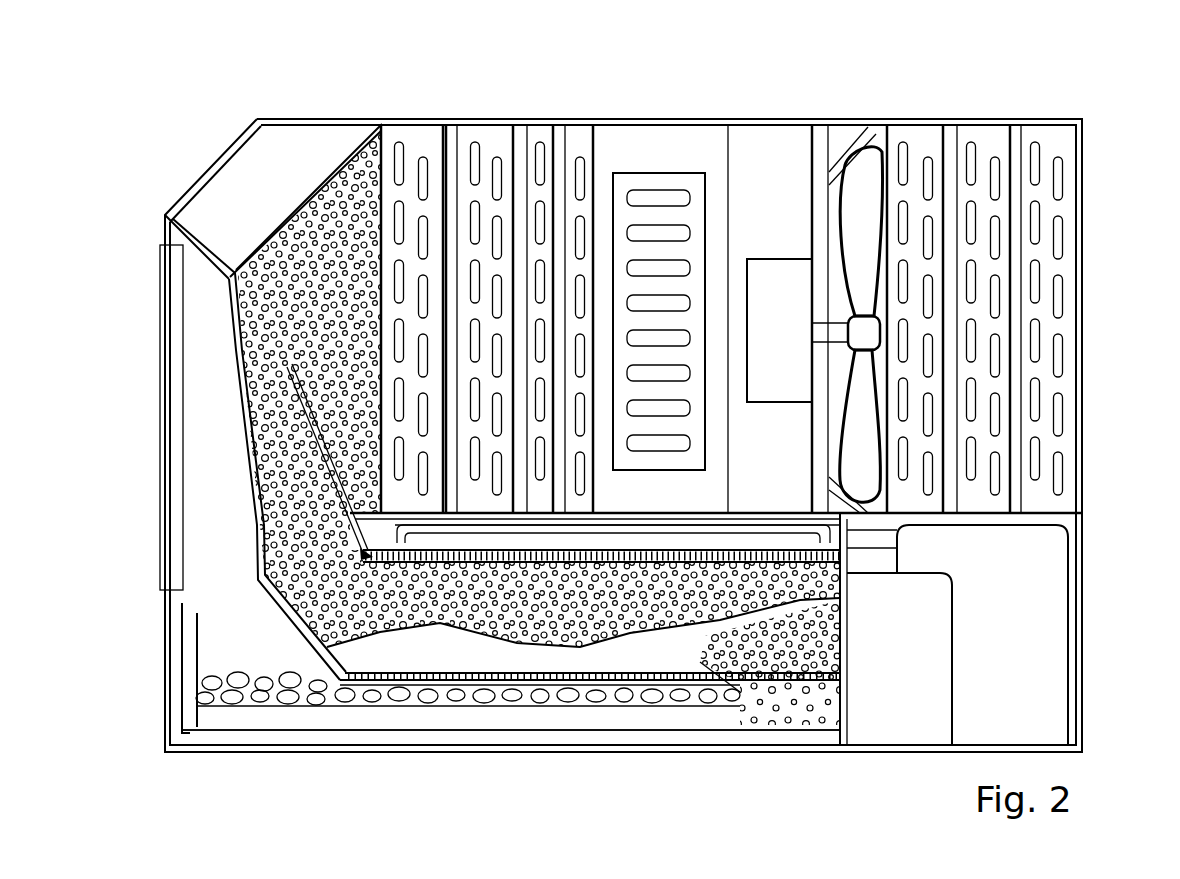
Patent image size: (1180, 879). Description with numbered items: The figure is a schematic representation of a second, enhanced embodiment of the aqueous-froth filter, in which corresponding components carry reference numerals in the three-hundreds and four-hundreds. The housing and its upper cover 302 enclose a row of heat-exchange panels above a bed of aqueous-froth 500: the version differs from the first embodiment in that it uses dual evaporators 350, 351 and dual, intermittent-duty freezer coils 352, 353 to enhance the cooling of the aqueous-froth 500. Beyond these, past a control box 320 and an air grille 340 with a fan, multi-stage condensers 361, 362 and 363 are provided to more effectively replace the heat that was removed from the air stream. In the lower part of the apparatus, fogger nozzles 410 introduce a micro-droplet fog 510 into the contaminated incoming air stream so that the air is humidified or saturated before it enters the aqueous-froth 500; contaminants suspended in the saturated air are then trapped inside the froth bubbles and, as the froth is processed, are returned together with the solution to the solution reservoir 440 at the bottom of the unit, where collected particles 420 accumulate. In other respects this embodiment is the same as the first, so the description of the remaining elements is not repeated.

The hopper housing cover 302 is at (287, 130).
The control box 320 is at (778, 290).
The air grille 340 is at (660, 180).
The evaporator 350 is at (415, 130).
The evaporator 351 is at (475, 125).
The intermittent-duty freezer coil 352 is at (538, 130).
The intermittent-duty freezer coil 353 is at (580, 137).
The multi-stage condenser 361 is at (920, 140).
The multi-stage condenser 362 is at (993, 135).
The multi-stage condenser 363 is at (1057, 145).
The fogger nozzles 410 is at (212, 690).
The collected particles 420 is at (770, 655).
The solution reservoir 440 is at (578, 728).
The aqueous-froth 500 is at (538, 601).
The micro-droplet fog 510 is at (452, 702).